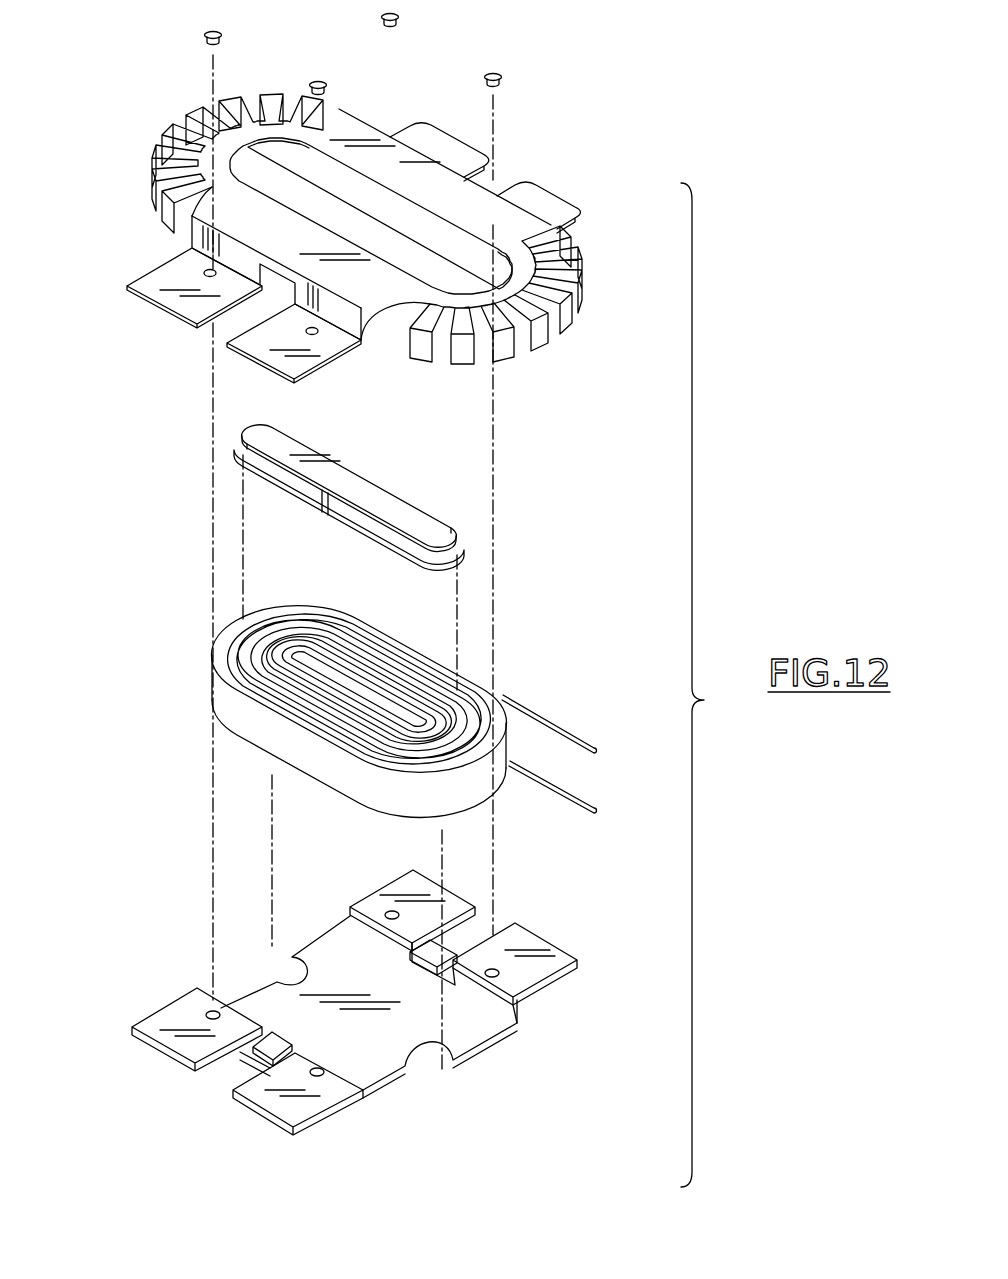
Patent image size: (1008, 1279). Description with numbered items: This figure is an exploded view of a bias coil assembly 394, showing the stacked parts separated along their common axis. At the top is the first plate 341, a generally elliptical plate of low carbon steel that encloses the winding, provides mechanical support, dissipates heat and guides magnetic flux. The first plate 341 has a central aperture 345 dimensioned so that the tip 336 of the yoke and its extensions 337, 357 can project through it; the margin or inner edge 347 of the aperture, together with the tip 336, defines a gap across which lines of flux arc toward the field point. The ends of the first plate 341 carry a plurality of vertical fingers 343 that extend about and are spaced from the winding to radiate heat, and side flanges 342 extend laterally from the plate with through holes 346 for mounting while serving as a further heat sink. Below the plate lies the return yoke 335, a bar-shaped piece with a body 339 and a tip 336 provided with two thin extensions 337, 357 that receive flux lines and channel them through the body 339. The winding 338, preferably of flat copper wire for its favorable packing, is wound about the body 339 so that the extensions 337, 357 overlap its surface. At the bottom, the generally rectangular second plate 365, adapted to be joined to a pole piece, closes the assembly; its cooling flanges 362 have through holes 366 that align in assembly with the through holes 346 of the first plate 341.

The first plate 341 is at (346, 217).
The side flanges 342 is at (418, 123).
The vertical fingers 343 is at (165, 203).
The central aperture 345 is at (257, 163).
The through holes 346 is at (240, 345).
The inner edge 347 is at (480, 216).
The bias coil assembly 394 is at (346, 225).
The return yoke 335 is at (344, 484).
The tip 336 is at (343, 478).
The extension 337 is at (455, 534).
The body 339 is at (273, 484).
The extension 357 is at (250, 430).
The winding 338 is at (215, 690).
The cooling flanges 362 is at (400, 917).
The second plate 365 is at (310, 1006).
The through holes 366 is at (212, 1017).